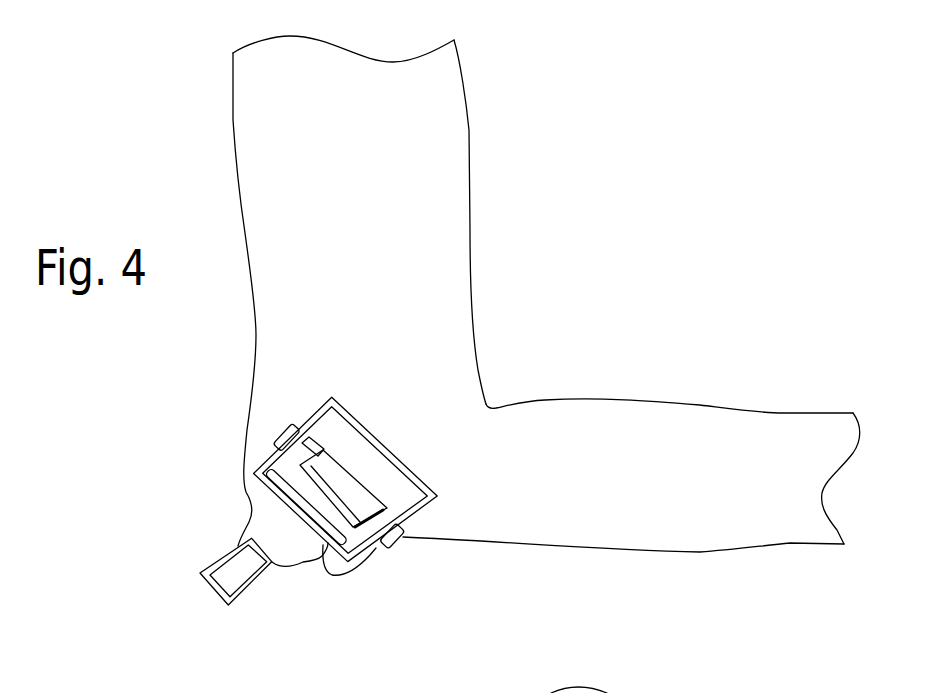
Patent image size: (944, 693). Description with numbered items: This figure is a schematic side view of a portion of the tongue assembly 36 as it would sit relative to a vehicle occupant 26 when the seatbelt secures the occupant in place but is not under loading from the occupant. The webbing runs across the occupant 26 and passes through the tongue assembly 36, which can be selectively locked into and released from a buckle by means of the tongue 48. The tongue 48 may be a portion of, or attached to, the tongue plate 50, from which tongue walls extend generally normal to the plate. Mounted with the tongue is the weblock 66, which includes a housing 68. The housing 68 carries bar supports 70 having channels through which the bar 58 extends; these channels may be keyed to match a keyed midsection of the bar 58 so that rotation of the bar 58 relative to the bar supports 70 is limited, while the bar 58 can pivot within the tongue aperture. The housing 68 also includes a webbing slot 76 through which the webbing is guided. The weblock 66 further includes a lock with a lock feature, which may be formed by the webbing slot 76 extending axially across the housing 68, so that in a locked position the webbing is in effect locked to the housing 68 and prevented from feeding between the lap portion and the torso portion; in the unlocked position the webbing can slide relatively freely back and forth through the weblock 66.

The occupant 26 is at (470, 128).
The tongue assembly 36 is at (325, 485).
The tongue 48 is at (212, 597).
The tongue plate 50 is at (331, 576).
The bar 58 is at (357, 480).
The weblock 66 is at (401, 570).
The housing 68 is at (352, 565).
The bar supports 70 is at (312, 447).
The webbing slot 76 is at (321, 544).